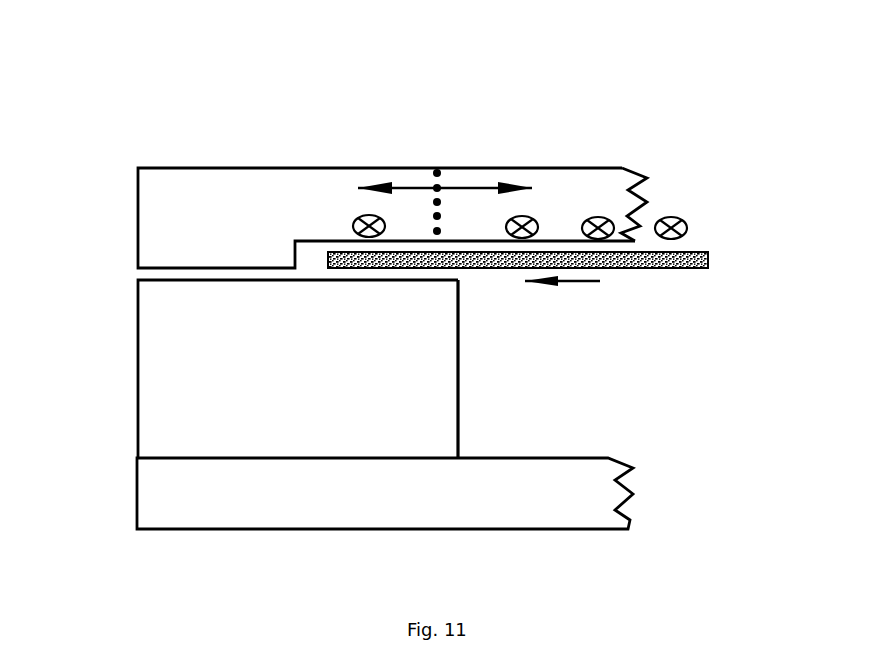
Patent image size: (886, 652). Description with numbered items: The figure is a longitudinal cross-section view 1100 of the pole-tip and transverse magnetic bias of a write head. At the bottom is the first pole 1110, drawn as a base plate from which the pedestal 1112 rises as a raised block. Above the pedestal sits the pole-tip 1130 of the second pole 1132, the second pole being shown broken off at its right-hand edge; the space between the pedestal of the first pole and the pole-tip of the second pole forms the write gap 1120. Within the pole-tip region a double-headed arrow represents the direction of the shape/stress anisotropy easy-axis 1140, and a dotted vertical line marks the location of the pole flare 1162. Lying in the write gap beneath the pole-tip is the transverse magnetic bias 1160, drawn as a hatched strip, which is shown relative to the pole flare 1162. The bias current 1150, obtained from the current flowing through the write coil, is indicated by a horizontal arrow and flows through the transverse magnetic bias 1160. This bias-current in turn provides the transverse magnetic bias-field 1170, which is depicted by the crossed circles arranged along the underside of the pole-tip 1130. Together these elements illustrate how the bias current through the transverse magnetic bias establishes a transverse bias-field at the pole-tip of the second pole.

The longitudinal cross-section view 1100 is at (118, 95).
The first pole 1110 is at (498, 470).
The pedestal 1112 is at (450, 397).
The write gap 1120 is at (132, 277).
The pole-tip 1130 is at (132, 216).
The second pole 1132 is at (640, 175).
The shape/stress anisotropy easy-axis 1140 is at (473, 178).
The bias current 1150 is at (572, 288).
The transverse magnetic bias 1160 is at (708, 252).
The pole flare 1162 is at (430, 216).
The transverse magnetic bias-field 1170 is at (680, 213).